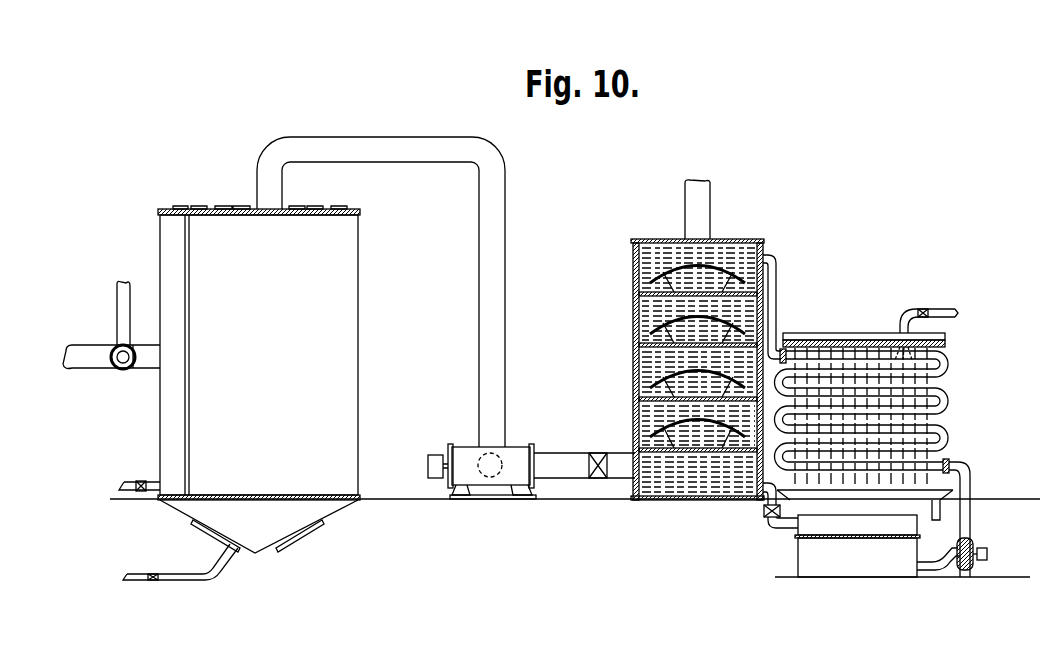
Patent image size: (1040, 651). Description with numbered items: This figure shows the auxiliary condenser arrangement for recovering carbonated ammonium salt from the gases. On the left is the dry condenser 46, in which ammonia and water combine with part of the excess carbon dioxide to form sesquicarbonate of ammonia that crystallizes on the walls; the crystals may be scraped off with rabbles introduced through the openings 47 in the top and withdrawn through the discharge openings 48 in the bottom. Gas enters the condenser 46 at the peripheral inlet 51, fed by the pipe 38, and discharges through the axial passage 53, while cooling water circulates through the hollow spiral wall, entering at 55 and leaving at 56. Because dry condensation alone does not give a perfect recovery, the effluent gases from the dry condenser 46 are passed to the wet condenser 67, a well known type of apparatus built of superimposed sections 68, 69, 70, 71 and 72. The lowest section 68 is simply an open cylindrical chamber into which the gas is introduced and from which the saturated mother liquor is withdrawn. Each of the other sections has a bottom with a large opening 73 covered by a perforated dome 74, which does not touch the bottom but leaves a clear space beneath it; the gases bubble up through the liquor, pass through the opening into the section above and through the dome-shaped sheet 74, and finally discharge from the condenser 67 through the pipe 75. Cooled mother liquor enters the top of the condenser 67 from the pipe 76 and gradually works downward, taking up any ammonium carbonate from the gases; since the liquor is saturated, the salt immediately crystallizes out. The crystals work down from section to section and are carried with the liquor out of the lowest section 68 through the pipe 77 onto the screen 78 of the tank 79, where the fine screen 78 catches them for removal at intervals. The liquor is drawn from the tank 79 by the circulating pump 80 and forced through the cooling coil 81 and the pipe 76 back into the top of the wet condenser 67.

The supply pipe 38 is at (117, 322).
The condenser 46 is at (259, 381).
The openings 47 is at (340, 209).
The discharge openings 48 is at (291, 541).
The peripheral inlet 51 is at (117, 358).
The axial passage 53 is at (381, 292).
The water inlet 55 is at (190, 584).
The water outlet 56 is at (158, 490).
The wet condenser 67 is at (698, 500).
The lowest section 68 is at (635, 487).
The section 69 is at (636, 418).
The section 70 is at (635, 375).
The section 71 is at (635, 320).
The upper tray chamber 72 is at (635, 265).
The opening 73 is at (694, 449).
The perforated dome 74 is at (650, 429).
The pipe 75 is at (702, 209).
The pipe 76 is at (776, 295).
The pipe 77 is at (779, 529).
The screen 78 is at (857, 527).
The tank 79 is at (857, 560).
The circulating pump 80 is at (975, 550).
The cooling coil 81 is at (941, 439).